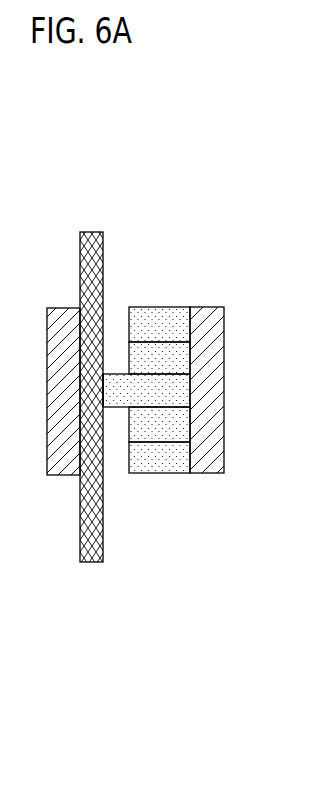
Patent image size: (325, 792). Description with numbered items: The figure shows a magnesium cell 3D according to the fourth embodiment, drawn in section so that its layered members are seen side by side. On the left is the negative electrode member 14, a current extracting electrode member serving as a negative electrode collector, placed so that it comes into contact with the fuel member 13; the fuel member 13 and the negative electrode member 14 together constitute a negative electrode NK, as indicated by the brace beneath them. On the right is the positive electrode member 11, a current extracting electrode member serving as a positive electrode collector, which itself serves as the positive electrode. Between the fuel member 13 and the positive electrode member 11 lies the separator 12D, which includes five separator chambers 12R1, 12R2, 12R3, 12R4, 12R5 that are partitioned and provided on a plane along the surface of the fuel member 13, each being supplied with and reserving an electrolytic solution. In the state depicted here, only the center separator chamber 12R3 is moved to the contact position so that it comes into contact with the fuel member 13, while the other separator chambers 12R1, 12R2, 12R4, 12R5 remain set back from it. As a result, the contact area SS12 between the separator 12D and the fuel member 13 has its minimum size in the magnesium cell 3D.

The magnesium cell 3D is at (137, 108).
The negative electrode NK is at (95, 620).
The negative electrode member 14 is at (63, 468).
The fuel member 13 is at (92, 555).
The contact area SS12 is at (105, 373).
The separator 12D is at (167, 458).
The separator chamber 12R1 is at (147, 320).
The separator chamber 12R2 is at (176, 353).
The center separator chamber 12R3 is at (172, 400).
The separator chamber 12R4 is at (157, 435).
The separator chamber 12R5 is at (145, 467).
The positive electrode member 11 is at (207, 322).